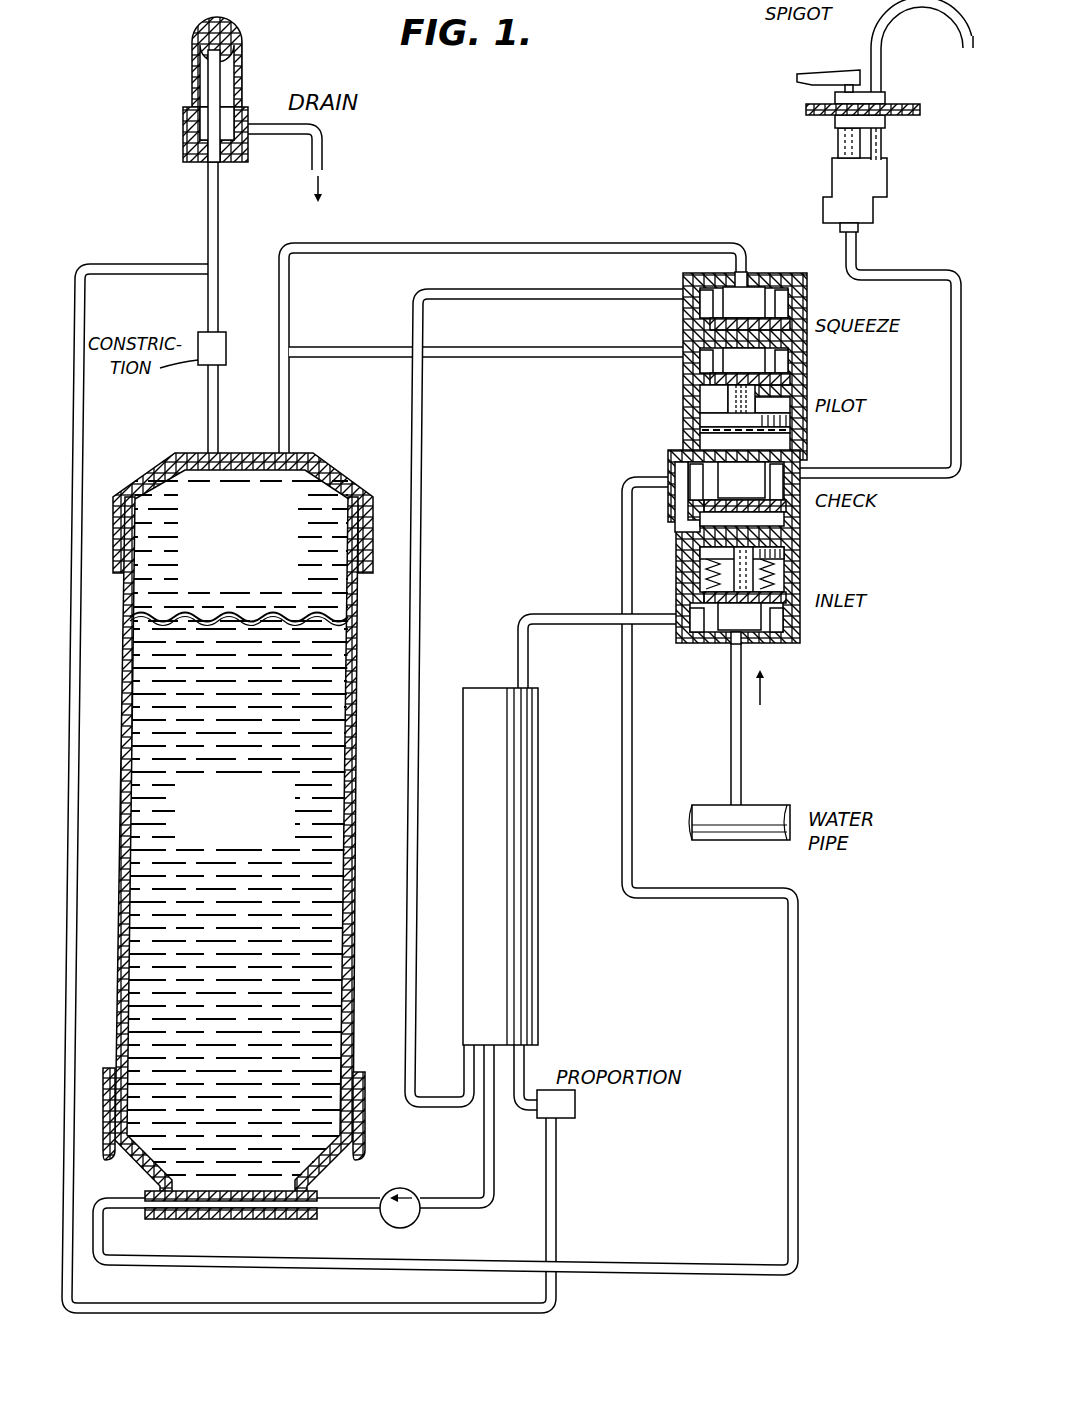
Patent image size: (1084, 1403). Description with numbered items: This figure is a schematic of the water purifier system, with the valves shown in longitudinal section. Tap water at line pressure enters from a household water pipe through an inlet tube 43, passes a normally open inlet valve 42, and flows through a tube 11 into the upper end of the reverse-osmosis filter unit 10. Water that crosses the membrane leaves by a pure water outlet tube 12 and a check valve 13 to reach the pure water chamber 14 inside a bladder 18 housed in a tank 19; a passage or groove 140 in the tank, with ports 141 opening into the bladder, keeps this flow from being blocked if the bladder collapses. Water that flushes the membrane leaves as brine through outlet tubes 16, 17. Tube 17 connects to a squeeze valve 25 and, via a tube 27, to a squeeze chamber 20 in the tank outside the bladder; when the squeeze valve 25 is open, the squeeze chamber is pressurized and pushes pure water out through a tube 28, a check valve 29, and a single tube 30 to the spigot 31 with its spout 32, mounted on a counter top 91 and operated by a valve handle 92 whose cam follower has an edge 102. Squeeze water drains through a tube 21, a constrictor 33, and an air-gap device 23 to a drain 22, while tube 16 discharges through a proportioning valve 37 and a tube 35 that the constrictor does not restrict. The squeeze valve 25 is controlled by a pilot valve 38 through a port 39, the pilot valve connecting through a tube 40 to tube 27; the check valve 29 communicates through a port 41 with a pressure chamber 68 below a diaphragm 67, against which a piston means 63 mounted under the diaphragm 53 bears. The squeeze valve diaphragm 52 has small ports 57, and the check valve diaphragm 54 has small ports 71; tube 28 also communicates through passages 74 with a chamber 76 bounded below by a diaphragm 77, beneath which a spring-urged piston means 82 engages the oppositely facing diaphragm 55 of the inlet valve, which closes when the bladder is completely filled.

The reverse-osmosis filter unit 10 is at (538, 784).
The tube 11 is at (562, 612).
The pure water outlet tube 12 is at (485, 1168).
The check valve 13 is at (412, 1226).
The pure water chamber 14 is at (244, 866).
The outlet tube 16 is at (530, 1068).
The outlet tube 17 is at (502, 292).
The bladder 18 is at (268, 616).
The tank 19 is at (122, 900).
The squeeze chamber 20 is at (248, 572).
The tube 21 is at (208, 212).
The drain 22 is at (324, 162).
The air-gap device 23 is at (244, 48).
The squeeze valve 25 is at (676, 276).
The tube 27 is at (466, 243).
The tube 28 is at (800, 990).
The check valve 29 is at (815, 514).
The tube 30 is at (908, 260).
The spigot 31 is at (888, 178).
The spout 32 is at (960, 32).
The constrictor 33 is at (226, 340).
The tube 35 is at (78, 745).
The proportioning valve 37 is at (575, 1114).
The pilot valve 38 is at (670, 380).
The port 39 is at (744, 360).
The tube 40 is at (500, 346).
The port 41 is at (787, 460).
The inlet valve 42 is at (815, 622).
The inlet tube 43 is at (742, 758).
The diaphragm 52 is at (722, 322).
The diaphragm 53 is at (790, 380).
The diaphragm 54 is at (741, 480).
The diaphragm 55 is at (704, 600).
The ports 57 is at (706, 338).
The piston means 63 is at (724, 412).
The diaphragm 67 is at (700, 430).
The pressure chamber 68 is at (775, 442).
The ports 71 is at (716, 508).
The passages 74 is at (684, 536).
The chamber 76 is at (708, 550).
The diaphragm 77 is at (782, 550).
The piston means 82 is at (760, 582).
The counter top 91 is at (806, 108).
The valve handle 92 is at (812, 72).
The edge 102 is at (838, 128).
The passage 140 is at (200, 1212).
The ports 141 is at (232, 1196).